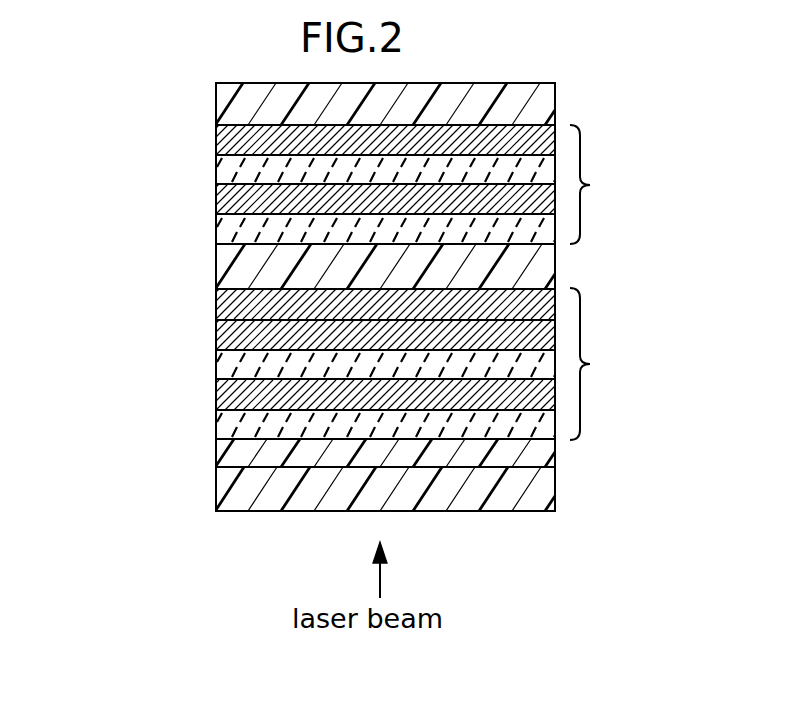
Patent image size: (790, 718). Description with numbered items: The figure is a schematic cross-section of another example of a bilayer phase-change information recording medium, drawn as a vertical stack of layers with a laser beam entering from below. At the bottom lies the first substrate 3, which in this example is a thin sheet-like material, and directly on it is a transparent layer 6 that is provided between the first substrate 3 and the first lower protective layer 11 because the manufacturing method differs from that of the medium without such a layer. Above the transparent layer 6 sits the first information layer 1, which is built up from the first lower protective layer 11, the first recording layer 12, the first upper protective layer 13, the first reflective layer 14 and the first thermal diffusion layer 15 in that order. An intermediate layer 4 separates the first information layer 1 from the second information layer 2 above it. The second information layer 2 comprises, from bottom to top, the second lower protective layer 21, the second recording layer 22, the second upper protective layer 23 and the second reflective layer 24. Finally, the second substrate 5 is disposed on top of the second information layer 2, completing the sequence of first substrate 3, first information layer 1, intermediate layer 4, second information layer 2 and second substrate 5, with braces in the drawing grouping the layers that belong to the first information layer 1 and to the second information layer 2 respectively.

The first information layer 1 is at (598, 364).
The second information layer 2 is at (598, 184).
The first substrate 3 is at (228, 491).
The intermediate layer 4 is at (228, 262).
The second substrate 5 is at (226, 103).
The transparent layer 6 is at (222, 453).
The first lower protective layer 11 is at (226, 431).
The first recording layer 12 is at (225, 398).
The first upper protective layer 13 is at (233, 369).
The first reflective layer 14 is at (216, 334).
The first thermal diffusion layer 15 is at (216, 302).
The second lower protective layer 21 is at (216, 229).
The second recording layer 22 is at (216, 199).
The second upper protective layer 23 is at (216, 171).
The second reflective layer 24 is at (216, 142).